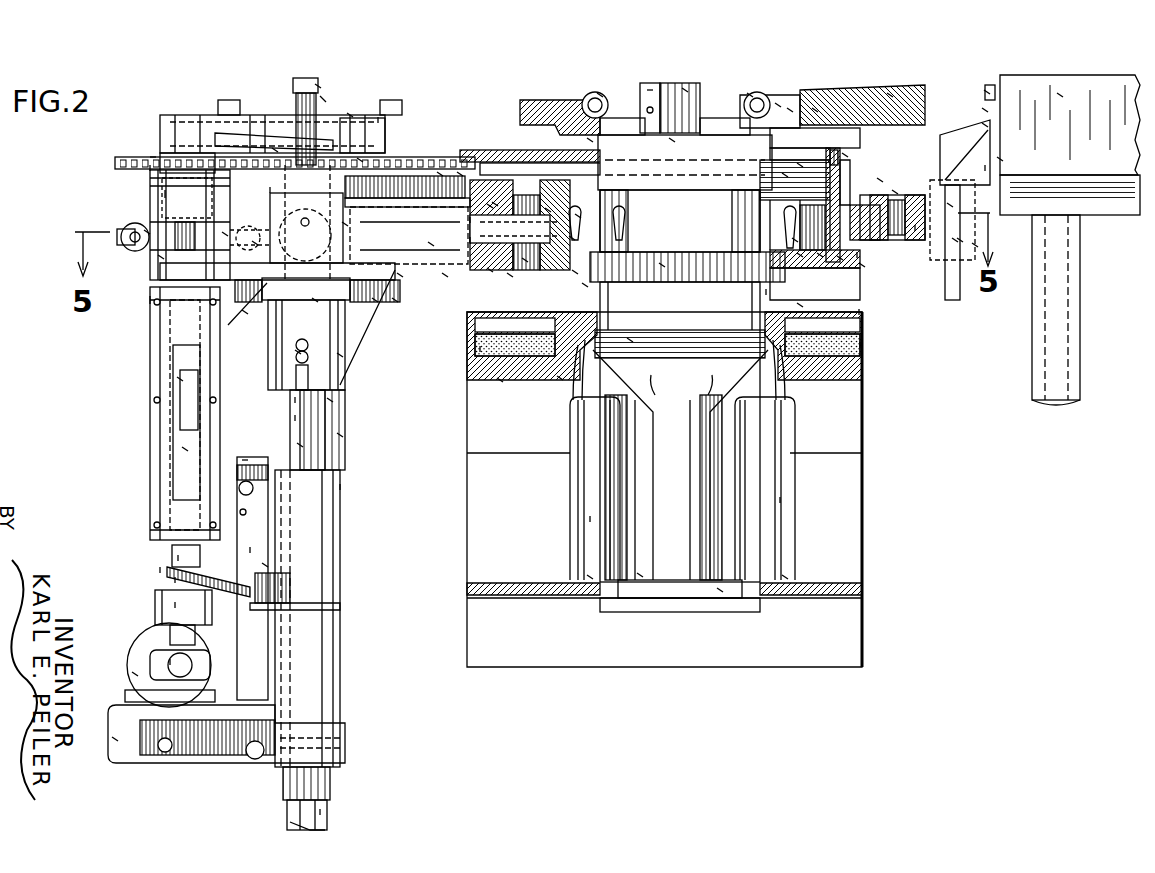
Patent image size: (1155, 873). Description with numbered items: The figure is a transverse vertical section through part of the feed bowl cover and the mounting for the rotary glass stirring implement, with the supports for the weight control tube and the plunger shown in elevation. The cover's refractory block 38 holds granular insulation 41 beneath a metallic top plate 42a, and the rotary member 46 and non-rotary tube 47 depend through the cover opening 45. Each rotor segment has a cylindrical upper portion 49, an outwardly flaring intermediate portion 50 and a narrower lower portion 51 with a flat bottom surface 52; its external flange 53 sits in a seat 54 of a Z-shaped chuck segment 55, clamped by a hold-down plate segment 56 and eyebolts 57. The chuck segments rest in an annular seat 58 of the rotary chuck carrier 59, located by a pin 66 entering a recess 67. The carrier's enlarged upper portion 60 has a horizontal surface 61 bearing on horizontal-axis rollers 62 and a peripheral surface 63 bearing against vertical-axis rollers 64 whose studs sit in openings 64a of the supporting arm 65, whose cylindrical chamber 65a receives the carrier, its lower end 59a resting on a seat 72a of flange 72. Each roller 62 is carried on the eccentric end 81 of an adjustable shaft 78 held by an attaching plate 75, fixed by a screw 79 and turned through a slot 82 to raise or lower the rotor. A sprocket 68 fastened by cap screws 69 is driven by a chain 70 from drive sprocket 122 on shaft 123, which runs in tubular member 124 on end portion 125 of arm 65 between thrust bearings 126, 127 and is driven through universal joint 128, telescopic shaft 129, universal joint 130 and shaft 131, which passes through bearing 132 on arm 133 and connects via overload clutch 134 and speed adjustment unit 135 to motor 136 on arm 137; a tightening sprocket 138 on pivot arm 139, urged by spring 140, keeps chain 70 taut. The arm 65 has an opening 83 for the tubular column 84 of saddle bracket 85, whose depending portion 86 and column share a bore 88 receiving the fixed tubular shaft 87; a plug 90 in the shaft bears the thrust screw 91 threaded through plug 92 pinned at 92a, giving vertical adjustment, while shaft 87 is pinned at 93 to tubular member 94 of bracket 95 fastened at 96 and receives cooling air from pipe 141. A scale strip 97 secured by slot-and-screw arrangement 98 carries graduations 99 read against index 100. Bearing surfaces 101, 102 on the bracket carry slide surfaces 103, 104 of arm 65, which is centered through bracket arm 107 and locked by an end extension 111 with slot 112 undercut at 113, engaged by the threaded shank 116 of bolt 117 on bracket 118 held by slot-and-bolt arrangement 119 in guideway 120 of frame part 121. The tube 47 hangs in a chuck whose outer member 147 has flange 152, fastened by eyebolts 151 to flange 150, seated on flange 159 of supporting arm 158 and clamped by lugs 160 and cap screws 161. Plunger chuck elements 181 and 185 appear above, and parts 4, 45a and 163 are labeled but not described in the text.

The base 4 is at (720, 590).
The refractory block 38 is at (500, 380).
The granular insulation 41 is at (480, 349).
The metallic top plate 42a is at (862, 312).
The opening 45 is at (800, 305).
The ring insert 45a is at (862, 345).
The rotary glass homogenizing and stirring implement 46 is at (775, 289).
The charge weight control tube 47 is at (645, 616).
The cylindrical upper portion 49 is at (630, 340).
The outwardly flaring intermediate portion 50 is at (560, 378).
The lower portion 51 is at (780, 500).
The flat bottom surface 52 is at (785, 578).
The external flange 53 is at (662, 265).
The seat 54 is at (585, 285).
The rotor chuck segment 55 is at (575, 272).
The hold-down plate segment 56 is at (572, 238).
The eyebolts 57 is at (578, 216).
The annular seat 58 is at (860, 255).
The rotary chuck carrier 59 is at (840, 258).
The lower end portion 59a is at (820, 255).
The upper portion 60 is at (495, 204).
The horizontal surface 61 is at (490, 205).
The rollers 62 is at (510, 275).
The outer peripheral surface 63 is at (880, 180).
The rollers 64 is at (895, 192).
The vertical opening 64a is at (915, 228).
The supporting arm or frame 65 is at (445, 275).
The cylindrical chamber 65a is at (955, 240).
The locating pin 66 is at (800, 255).
The recess 67 is at (795, 240).
The annular sprocket 68 is at (800, 165).
The cap screws 69 is at (845, 155).
The chain 70 is at (440, 175).
The flange 72 is at (525, 260).
The annular seat 72a is at (862, 265).
The attaching plate 75 is at (490, 270).
The roller shaft 78 is at (470, 240).
The screw 79 is at (470, 220).
The eccentric inner end portion 81 is at (548, 210).
The screw driver slot 82 is at (430, 245).
The vertical opening 83 is at (345, 225).
The tubular column 84 is at (272, 190).
The saddle bracket 85 is at (375, 300).
The depending tubular portion 86 is at (340, 355).
The tubular supporting shaft 87 is at (330, 400).
The vertical bore 88 is at (315, 300).
The flanged plug 90 is at (275, 150).
The adjusting thrust screw 91 is at (318, 86).
The flanged plug 92 is at (325, 100).
The pin 92a is at (380, 120).
The pin 93 is at (340, 435).
The vertical tubular member 94 is at (340, 487).
The bracket 95 is at (250, 550).
The fastening 96 is at (245, 460).
The scale strip 97 is at (295, 400).
The vertical slot and fastening screw arrangement 98 is at (298, 352).
The graduations 99 is at (295, 418).
The index element 100 is at (300, 445).
The horizontal bearing surface 101 is at (245, 312).
The horizontal bearing surface 102 is at (395, 300).
The slide bearing surface 103 is at (255, 244).
The slide bearing surface 104 is at (400, 275).
The bracket arm 107 is at (148, 232).
The end extension 111 is at (960, 240).
The slot 112 is at (950, 205).
The undercut 113 is at (975, 245).
The threaded shank 116 is at (985, 168).
The headed bolt 117 is at (985, 125).
The bracket 118 is at (985, 110).
The horizontal slot and bolt arrangement 119 is at (987, 92).
The horizontal guideway 120 is at (1000, 160).
The stationary frame part 121 is at (1060, 95).
The drive sprocket 122 is at (152, 156).
The vertical drive shaft 123 is at (165, 195).
The vertical tubular member 124 is at (160, 258).
The end portion 125 is at (225, 235).
The thrust bearing 126 is at (150, 168).
The thrust bearing 127 is at (150, 300).
The universal joint 128 is at (180, 380).
The telescopic shaft 129 is at (185, 450).
The universal joint 130 is at (178, 558).
The shaft 131 is at (175, 580).
The bearing 132 is at (160, 570).
The arm 133 is at (265, 565).
The overload clutch releasing mechanism 134 is at (175, 605).
The speed adjustment unit 135 is at (170, 662).
The motor 136 is at (135, 675).
The arm 137 is at (115, 740).
The chain tightening sprocket 138 is at (360, 160).
The pivot arm 139 is at (350, 115).
The spring 140 is at (460, 175).
The supply pipe 141 is at (320, 812).
The outer annular supporting member 147 is at (785, 175).
The out turned flange 150 is at (750, 95).
The eyebolts 151 is at (600, 95).
The outwardly turned flange 152 is at (672, 140).
The tube supporting arm 158 is at (890, 95).
The inwardly extending flange 159 is at (590, 140).
The clamping lugs 160 is at (778, 105).
The cap screws 161 is at (790, 110).
The link 163 is at (815, 110).
The plunger chuck element 181 is at (685, 90).
The plunger chuck element 185 is at (650, 90).